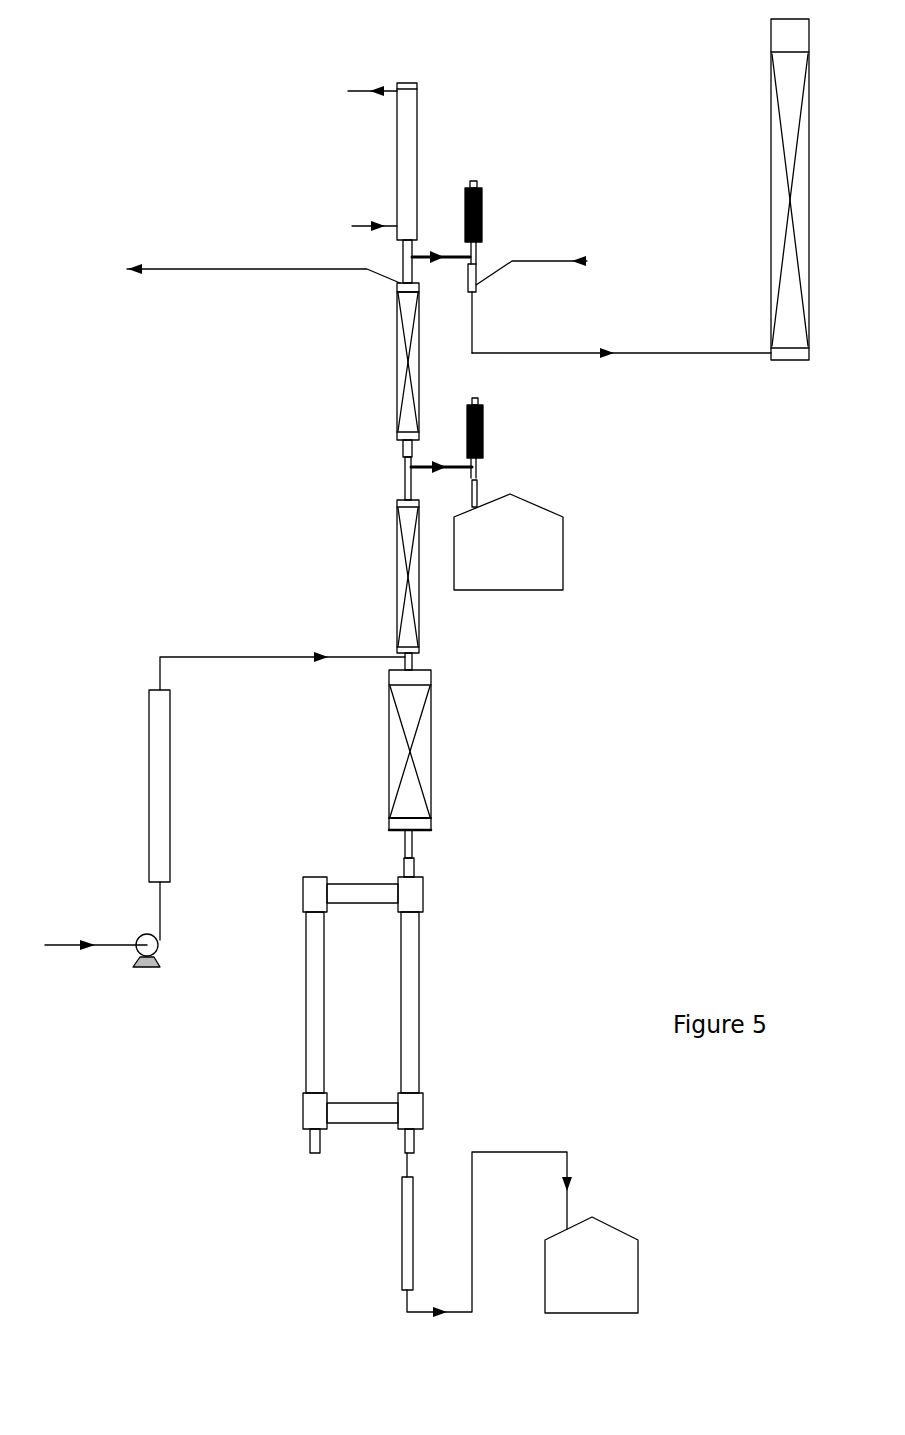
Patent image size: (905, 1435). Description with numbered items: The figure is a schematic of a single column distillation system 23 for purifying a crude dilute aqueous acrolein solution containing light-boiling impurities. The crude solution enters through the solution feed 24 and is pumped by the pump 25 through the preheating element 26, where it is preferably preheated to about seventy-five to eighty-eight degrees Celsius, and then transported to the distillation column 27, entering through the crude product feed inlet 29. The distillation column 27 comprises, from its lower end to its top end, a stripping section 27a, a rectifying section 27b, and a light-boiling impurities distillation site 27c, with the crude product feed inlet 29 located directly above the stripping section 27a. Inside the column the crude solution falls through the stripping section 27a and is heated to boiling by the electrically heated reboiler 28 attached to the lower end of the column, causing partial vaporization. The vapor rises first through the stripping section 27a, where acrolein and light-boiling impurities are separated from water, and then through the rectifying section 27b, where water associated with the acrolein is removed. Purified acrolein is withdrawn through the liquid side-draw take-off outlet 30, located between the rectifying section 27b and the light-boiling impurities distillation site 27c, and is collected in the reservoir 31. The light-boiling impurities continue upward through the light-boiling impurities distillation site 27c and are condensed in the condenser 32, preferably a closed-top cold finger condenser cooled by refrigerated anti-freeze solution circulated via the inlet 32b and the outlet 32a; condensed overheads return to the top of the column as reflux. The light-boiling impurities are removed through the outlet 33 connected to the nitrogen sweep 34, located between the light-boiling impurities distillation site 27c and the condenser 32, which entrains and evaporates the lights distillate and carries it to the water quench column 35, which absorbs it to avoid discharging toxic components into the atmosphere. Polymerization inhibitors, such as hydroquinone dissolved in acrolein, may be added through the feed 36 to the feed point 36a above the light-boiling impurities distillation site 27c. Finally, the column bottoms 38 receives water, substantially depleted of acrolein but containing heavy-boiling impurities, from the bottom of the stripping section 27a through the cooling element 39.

The single column distillation system 23 is at (185, 160).
The solution feed 24 is at (98, 948).
The pump 25 is at (158, 966).
The preheating element 26 is at (170, 785).
The distillation column 27 is at (220, 375).
The stripping section 27a is at (431, 751).
The rectifying section 27b is at (420, 578).
The light-boiling impurities distillation site 27c is at (392, 350).
The electrically heated reboiler 28 is at (303, 1058).
The crude product feed inlet 29 is at (398, 657).
The liquid side-draw take-off outlet 30 is at (483, 433).
The reservoir 31 is at (494, 560).
The condenser 32 is at (418, 160).
The outlet 32a is at (371, 94).
The inlet 32b is at (368, 222).
The outlet 33 is at (482, 214).
The nitrogen sweep 34 is at (486, 264).
The water quench column 35 is at (771, 200).
The feed 36 is at (226, 270).
The feed point 36a is at (394, 280).
The column bottoms 38 is at (578, 1286).
The cooling element 39 is at (400, 1233).